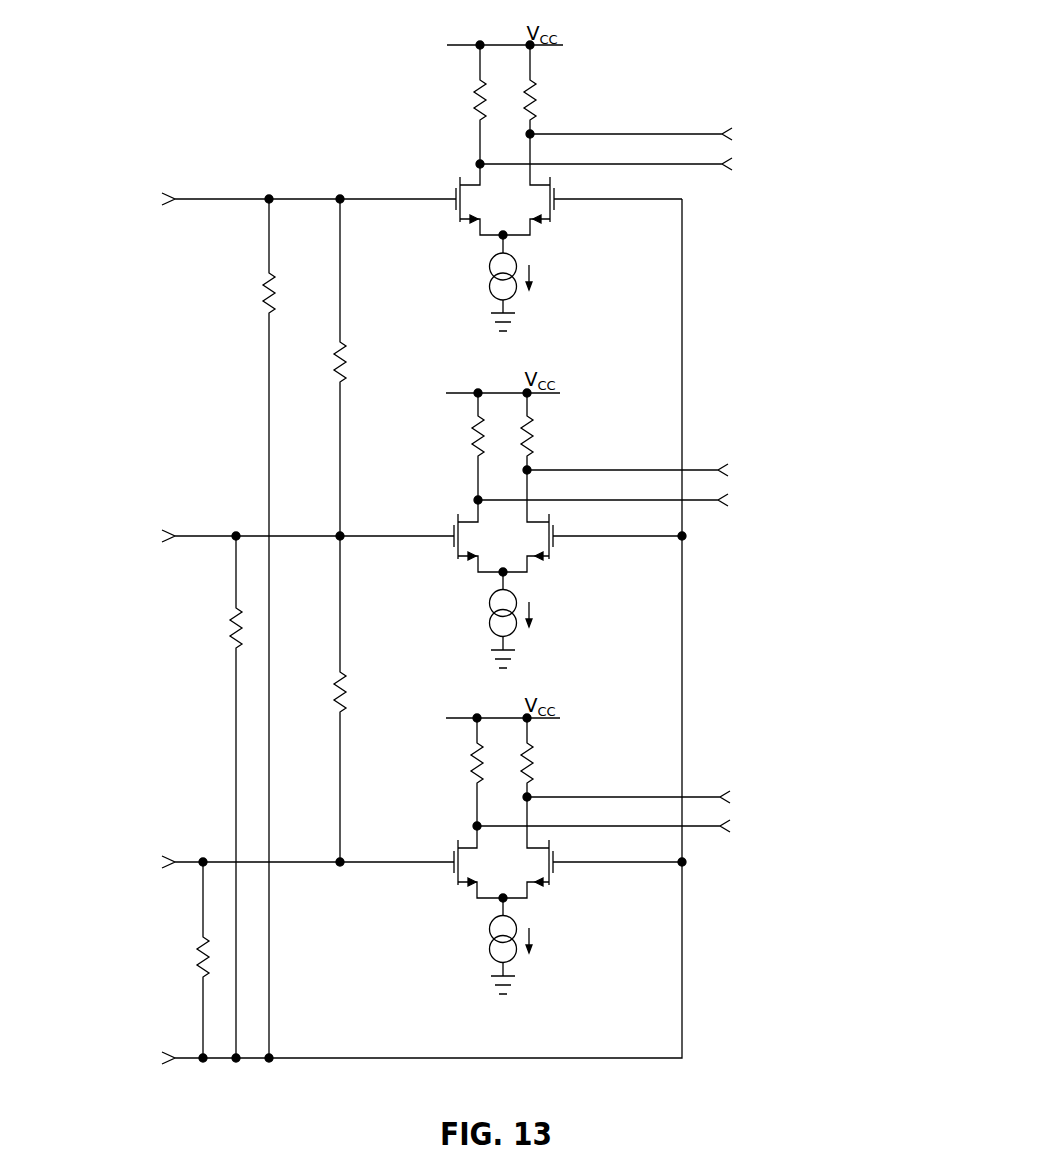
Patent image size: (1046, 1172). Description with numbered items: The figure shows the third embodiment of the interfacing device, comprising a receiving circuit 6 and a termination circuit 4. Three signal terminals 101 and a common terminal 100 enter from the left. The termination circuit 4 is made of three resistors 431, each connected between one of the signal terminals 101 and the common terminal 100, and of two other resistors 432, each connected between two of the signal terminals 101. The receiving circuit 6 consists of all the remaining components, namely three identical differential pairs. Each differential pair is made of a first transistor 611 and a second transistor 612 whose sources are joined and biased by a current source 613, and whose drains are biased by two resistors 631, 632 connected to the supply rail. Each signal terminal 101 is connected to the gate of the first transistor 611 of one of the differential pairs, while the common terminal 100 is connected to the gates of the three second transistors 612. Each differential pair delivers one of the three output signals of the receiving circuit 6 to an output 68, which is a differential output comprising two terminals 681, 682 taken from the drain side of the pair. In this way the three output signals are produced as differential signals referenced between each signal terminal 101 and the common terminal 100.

The termination circuit 4 is at (250, 148).
The receiving circuit 6 is at (352, 70).
The output 68 is at (850, 125).
The common terminal 100 is at (133, 1058).
The signal terminal 101 is at (135, 199).
The resistor 431 is at (245, 292).
The other resistor 432 is at (355, 352).
The first transistor 611 is at (440, 175).
The second transistor 612 is at (572, 210).
The current source 613 is at (548, 288).
The resistor 631 is at (547, 97).
The resistor 632 is at (462, 98).
The terminal 681 is at (758, 130).
The terminal 682 is at (758, 160).